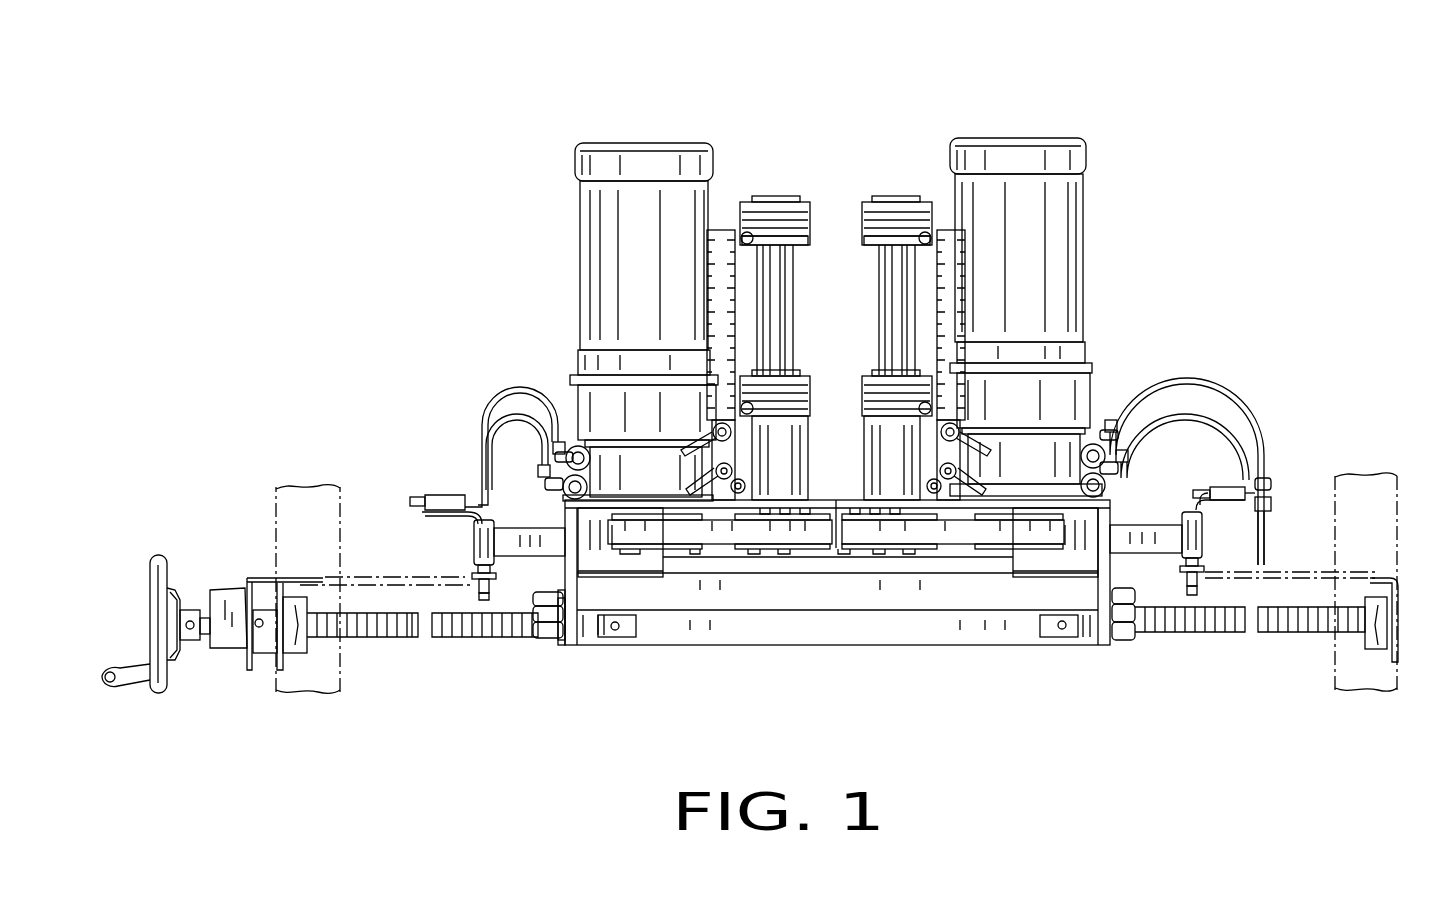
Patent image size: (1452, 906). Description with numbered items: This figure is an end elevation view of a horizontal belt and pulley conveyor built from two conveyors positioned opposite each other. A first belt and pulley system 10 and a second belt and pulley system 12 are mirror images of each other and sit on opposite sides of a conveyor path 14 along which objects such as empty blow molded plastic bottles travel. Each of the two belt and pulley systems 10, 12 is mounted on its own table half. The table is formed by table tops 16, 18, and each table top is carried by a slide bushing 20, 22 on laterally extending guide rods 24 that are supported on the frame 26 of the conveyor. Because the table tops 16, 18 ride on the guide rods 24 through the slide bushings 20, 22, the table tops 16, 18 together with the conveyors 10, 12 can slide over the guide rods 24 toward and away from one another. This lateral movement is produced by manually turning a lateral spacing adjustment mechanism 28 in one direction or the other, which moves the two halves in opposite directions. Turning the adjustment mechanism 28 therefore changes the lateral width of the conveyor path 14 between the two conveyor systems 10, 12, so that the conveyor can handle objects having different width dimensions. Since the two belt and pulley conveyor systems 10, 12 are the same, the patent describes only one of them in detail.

The first belt and pulley system 10 is at (641, 138).
The second belt and pulley system 12 is at (1056, 133).
The conveyor path 14 is at (835, 234).
The table top 16 is at (624, 492).
The table top 18 is at (1046, 494).
The slide bushing 20 is at (623, 570).
The slide bushing 22 is at (1050, 567).
The guide rods 24 is at (713, 556).
The frame 26 is at (298, 522).
The lateral spacing adjustment mechanism 28 is at (150, 700).